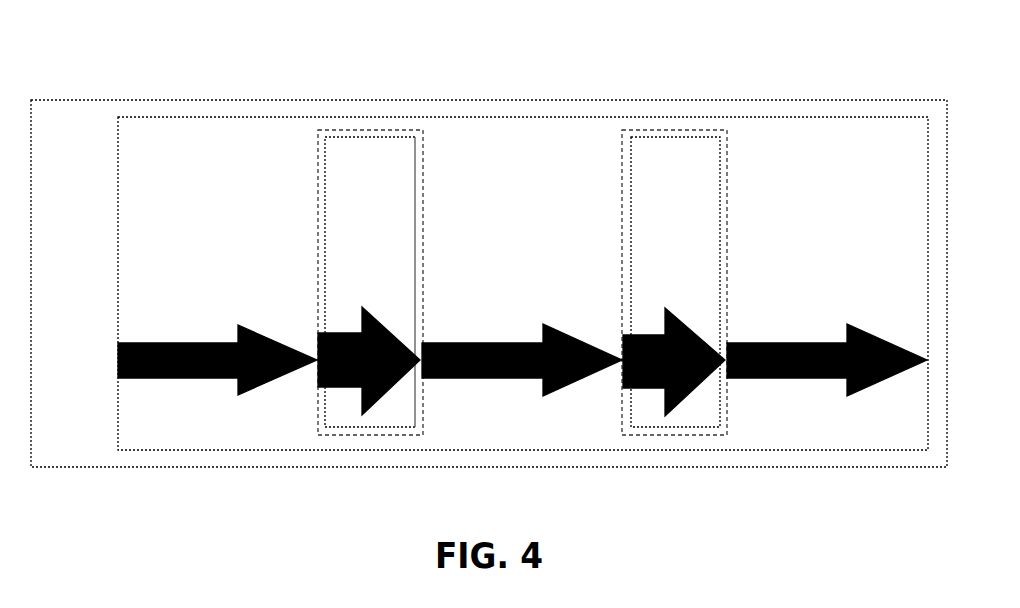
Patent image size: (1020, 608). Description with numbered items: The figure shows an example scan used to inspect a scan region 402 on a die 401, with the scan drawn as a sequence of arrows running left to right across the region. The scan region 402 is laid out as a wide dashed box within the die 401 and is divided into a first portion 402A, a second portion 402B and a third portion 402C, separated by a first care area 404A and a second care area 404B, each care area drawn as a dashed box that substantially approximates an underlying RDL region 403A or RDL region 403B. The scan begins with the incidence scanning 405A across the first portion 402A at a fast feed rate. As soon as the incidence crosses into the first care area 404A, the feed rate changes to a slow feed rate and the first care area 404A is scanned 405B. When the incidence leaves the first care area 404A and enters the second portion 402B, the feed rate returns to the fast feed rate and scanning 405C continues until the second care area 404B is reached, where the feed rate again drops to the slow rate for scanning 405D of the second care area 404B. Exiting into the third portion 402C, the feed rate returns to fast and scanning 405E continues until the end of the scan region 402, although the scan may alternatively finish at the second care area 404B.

The die 401 is at (103, 253).
The scan region 402 is at (270, 117).
The first portion of scan region 402A is at (268, 253).
The second portion of scan region 402B is at (546, 253).
The third portion of scan region 402C is at (827, 253).
The RDL region 403A is at (394, 253).
The RDL region 403B is at (699, 253).
The first care area 404A is at (370, 130).
The second care area 404B is at (674, 130).
The scan of first portion 405A is at (241, 371).
The scan of first care area 405B is at (393, 371).
The scan of second portion 405C is at (546, 371).
The scan of second care area 405D is at (698, 371).
The scan of third portion 405E is at (849, 371).